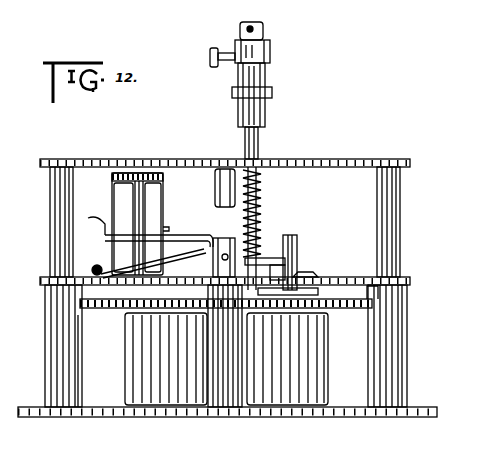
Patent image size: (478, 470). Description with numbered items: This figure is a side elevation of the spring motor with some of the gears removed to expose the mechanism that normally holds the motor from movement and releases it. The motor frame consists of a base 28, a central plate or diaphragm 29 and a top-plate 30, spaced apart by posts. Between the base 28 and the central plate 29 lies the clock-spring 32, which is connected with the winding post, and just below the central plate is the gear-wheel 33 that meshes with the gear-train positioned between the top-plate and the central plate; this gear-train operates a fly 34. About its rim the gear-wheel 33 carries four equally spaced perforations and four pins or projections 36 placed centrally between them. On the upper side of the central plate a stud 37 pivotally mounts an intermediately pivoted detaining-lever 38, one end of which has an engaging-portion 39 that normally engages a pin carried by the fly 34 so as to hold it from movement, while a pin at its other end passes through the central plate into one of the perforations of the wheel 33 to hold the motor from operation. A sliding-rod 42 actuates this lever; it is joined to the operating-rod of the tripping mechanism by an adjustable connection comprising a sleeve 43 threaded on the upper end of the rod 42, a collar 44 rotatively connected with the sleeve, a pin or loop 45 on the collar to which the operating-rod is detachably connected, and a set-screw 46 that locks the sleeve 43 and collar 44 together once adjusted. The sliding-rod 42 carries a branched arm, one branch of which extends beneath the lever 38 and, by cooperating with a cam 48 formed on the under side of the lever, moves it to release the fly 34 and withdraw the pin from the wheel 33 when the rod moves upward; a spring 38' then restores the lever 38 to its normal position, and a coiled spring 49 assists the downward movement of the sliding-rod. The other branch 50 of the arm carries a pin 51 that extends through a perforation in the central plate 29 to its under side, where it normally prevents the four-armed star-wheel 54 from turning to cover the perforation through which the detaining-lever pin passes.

The base 28 is at (355, 414).
The central plate or diaphragm 29 is at (410, 281).
The top-plate 30 is at (410, 167).
The clock-spring 32 is at (125, 349).
The gear-wheel 33 is at (349, 310).
The fly 34 is at (163, 206).
The pins or projections 36 is at (112, 300).
The stud 37 is at (225, 238).
The detaining-lever 38 is at (159, 231).
The spring 38' is at (149, 263).
The engaging-portion 39 is at (94, 215).
The sliding-rod 42 is at (258, 141).
The sleeve 43 is at (265, 106).
The collar 44 is at (270, 50).
The pin or loop 45 is at (263, 30).
The set-screw 46 is at (212, 55).
The cam 48 is at (270, 252).
The coiled spring 49 is at (262, 196).
The branch 50 is at (286, 261).
The pin 51 is at (300, 272).
The star-wheel 54 is at (318, 291).